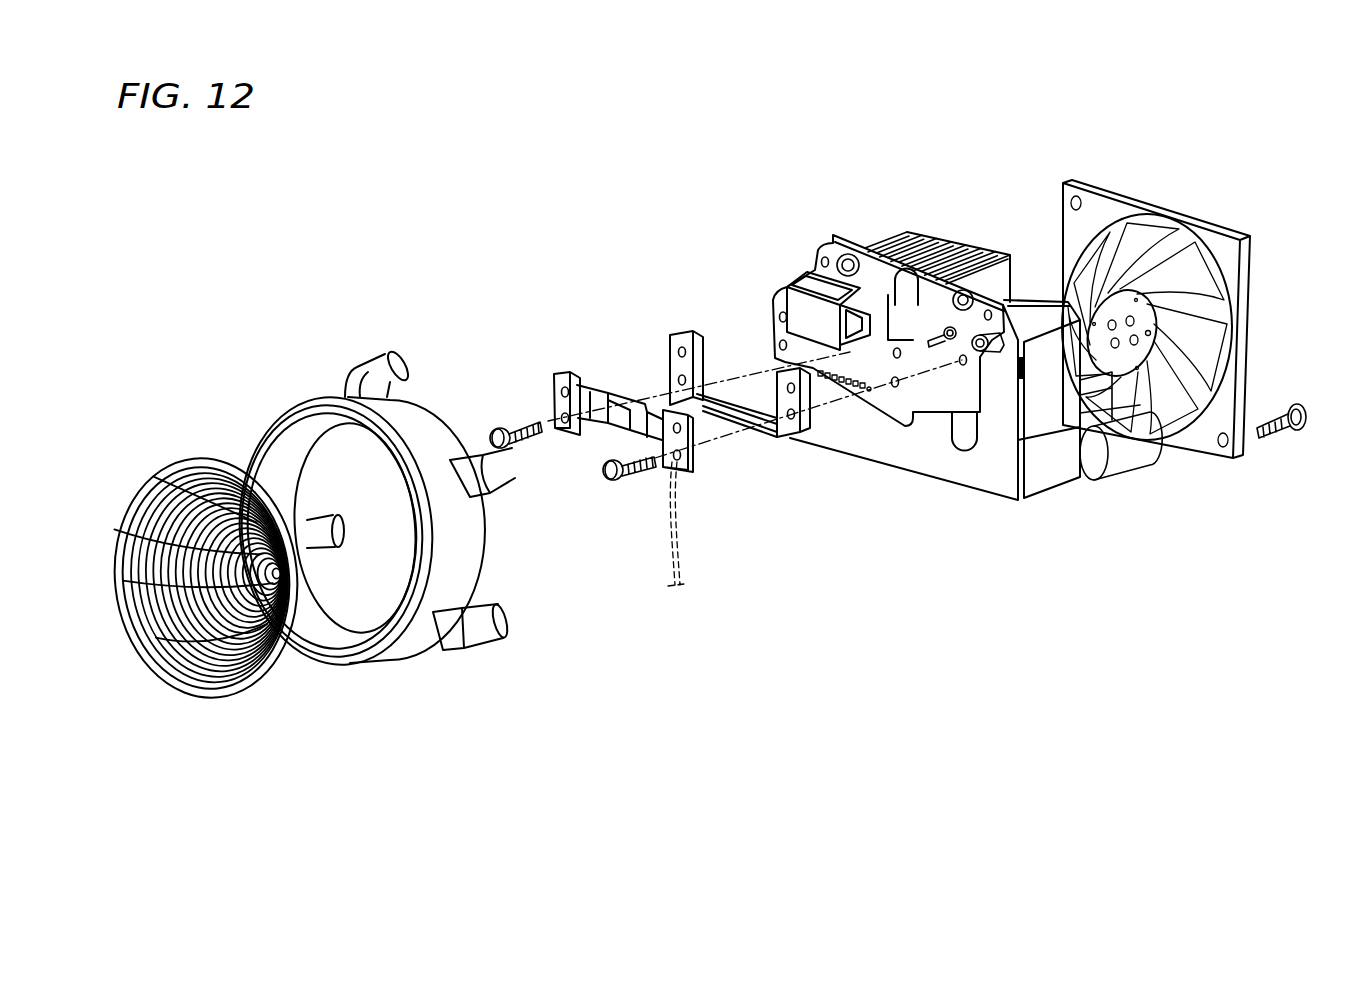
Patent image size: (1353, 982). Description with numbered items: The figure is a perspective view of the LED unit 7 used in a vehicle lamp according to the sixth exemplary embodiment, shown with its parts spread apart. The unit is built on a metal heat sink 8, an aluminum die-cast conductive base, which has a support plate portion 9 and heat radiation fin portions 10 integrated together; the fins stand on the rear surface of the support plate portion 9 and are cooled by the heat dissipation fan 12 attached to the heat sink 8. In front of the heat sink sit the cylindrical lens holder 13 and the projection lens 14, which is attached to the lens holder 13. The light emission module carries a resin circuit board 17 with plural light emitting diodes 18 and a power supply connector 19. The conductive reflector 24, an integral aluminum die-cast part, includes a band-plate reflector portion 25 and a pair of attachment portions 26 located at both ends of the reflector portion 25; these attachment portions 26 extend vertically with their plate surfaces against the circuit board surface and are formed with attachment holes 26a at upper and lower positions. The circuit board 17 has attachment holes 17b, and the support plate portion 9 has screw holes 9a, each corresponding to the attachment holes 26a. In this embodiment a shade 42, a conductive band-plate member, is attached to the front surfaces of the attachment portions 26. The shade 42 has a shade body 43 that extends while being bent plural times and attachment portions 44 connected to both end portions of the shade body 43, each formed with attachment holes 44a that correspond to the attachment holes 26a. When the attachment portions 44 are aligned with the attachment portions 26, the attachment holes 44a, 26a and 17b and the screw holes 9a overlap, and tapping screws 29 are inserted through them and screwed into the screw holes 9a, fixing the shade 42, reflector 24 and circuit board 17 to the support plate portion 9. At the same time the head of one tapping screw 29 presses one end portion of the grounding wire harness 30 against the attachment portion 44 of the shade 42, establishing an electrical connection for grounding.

The LED unit 7 is at (593, 222).
The heat sink 8 is at (838, 349).
The support plate portion 9 is at (935, 437).
The screw holes 9a is at (976, 452).
The heat radiation fin portions 10 is at (927, 230).
The heat dissipation fan 12 is at (1162, 210).
The lens holder 13 is at (345, 400).
The projection lens 14 is at (168, 463).
The circuit board 17 is at (895, 412).
The attachment holes 17b is at (780, 317).
The light emitting diodes 18 is at (848, 428).
The power supply connector 19 is at (780, 293).
The reflector 24 is at (706, 436).
The reflector portion 25 is at (733, 440).
The attachment portions 26 is at (670, 358).
The attachment holes 26a is at (673, 345).
The tapping screws 29 is at (518, 445).
The grounding wire harness 30 is at (660, 560).
The shade 42 is at (591, 407).
The shade body 43 is at (602, 390).
The attachment portions 44 is at (553, 403).
The attachment holes 44a is at (550, 388).